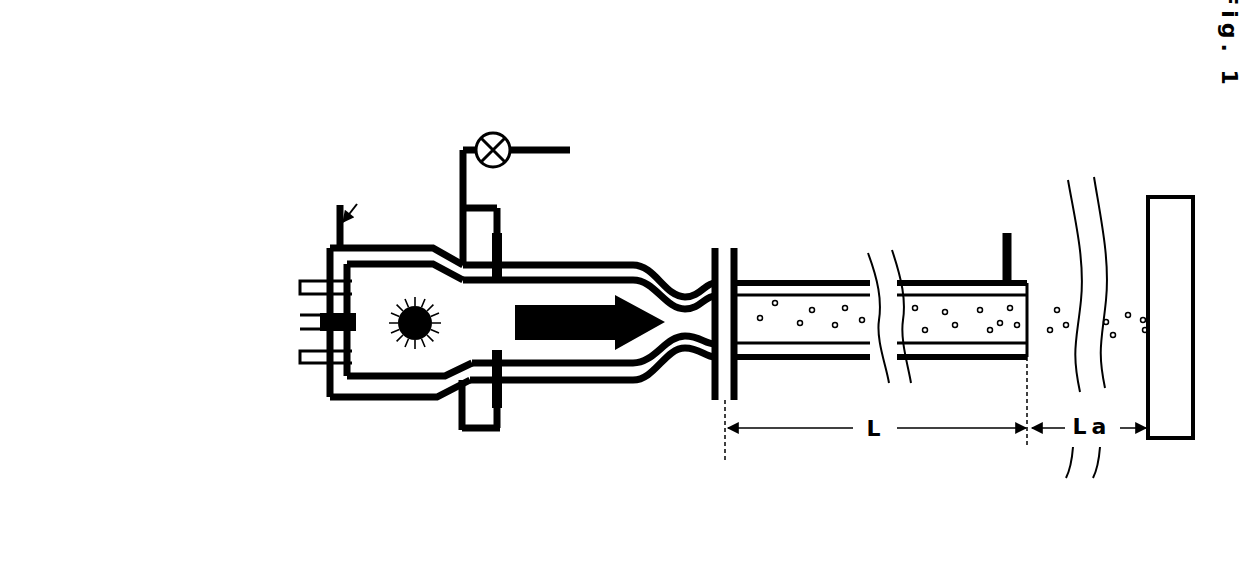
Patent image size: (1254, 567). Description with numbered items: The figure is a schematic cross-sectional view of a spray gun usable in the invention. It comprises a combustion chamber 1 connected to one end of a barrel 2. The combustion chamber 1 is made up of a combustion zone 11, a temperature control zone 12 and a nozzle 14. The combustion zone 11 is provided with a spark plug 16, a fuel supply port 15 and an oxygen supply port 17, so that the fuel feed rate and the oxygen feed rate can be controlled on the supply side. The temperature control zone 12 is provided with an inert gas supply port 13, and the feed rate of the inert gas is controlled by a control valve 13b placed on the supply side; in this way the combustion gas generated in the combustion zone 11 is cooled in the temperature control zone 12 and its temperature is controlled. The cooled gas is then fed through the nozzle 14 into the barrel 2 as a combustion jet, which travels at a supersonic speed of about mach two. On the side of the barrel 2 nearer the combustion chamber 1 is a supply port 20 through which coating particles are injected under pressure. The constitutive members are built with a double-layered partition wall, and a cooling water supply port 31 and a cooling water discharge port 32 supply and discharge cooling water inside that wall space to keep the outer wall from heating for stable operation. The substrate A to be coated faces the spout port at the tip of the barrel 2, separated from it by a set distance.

The combustion chamber 1 is at (593, 247).
The barrel 2 is at (815, 275).
The combustion zone 11 is at (423, 367).
The temperature control zone 12 is at (547, 350).
The inert gas supply port 13 is at (499, 350).
The control valve 13b is at (486, 130).
The nozzle 14 is at (687, 330).
The fuel supply port 15 is at (300, 283).
The spark plug 16 is at (300, 322).
The oxygen supply port 17 is at (300, 358).
The supply port 20 is at (729, 320).
The cooling water supply port 31 is at (484, 195).
The cooling water discharge port 32 is at (1003, 240).
The substrate A is at (1152, 200).